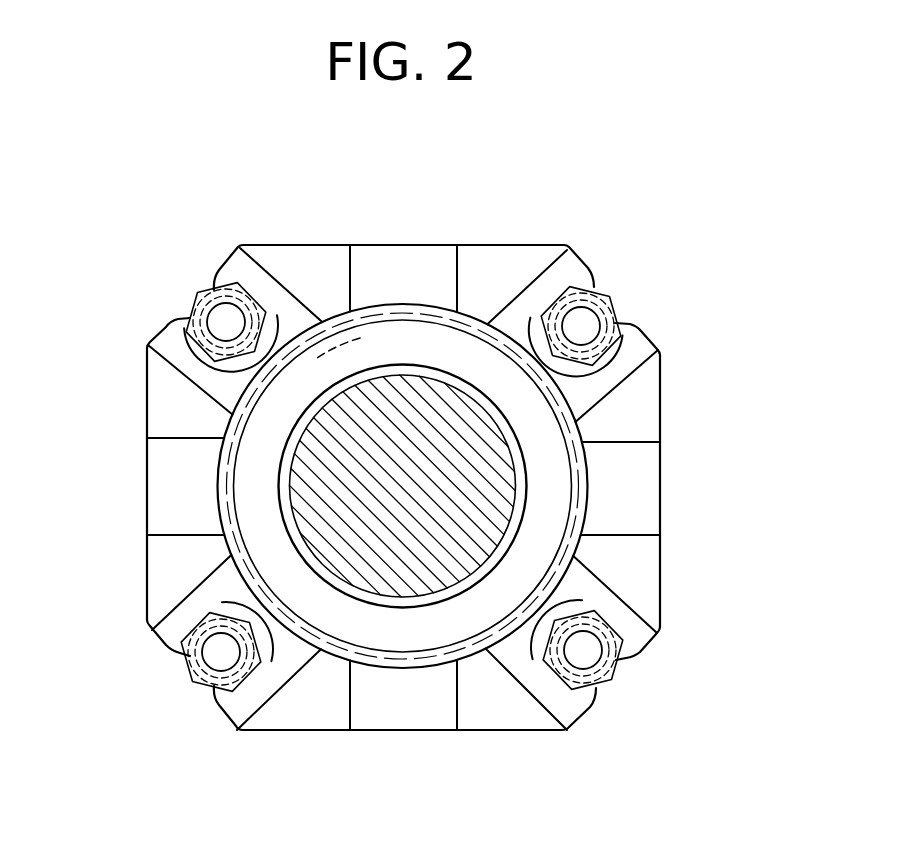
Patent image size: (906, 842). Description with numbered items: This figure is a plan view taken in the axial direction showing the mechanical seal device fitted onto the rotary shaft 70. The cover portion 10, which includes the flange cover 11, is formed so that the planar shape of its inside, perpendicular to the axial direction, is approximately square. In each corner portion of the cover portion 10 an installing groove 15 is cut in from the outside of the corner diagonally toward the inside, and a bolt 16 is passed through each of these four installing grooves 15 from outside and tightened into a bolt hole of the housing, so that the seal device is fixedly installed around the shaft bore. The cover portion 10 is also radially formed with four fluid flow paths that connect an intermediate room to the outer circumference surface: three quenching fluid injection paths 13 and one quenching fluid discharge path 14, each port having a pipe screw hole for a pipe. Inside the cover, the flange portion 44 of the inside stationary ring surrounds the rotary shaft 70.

The cover portion 10 is at (660, 388).
The flange cover 11 is at (560, 490).
The quenching fluid injection path 13 is at (457, 278).
The quenching fluid discharge path 14 is at (457, 700).
The installing groove 15 is at (208, 300).
The bolt 16 is at (224, 321).
The flange portion 44 is at (357, 342).
The rotary shaft 70 is at (380, 578).